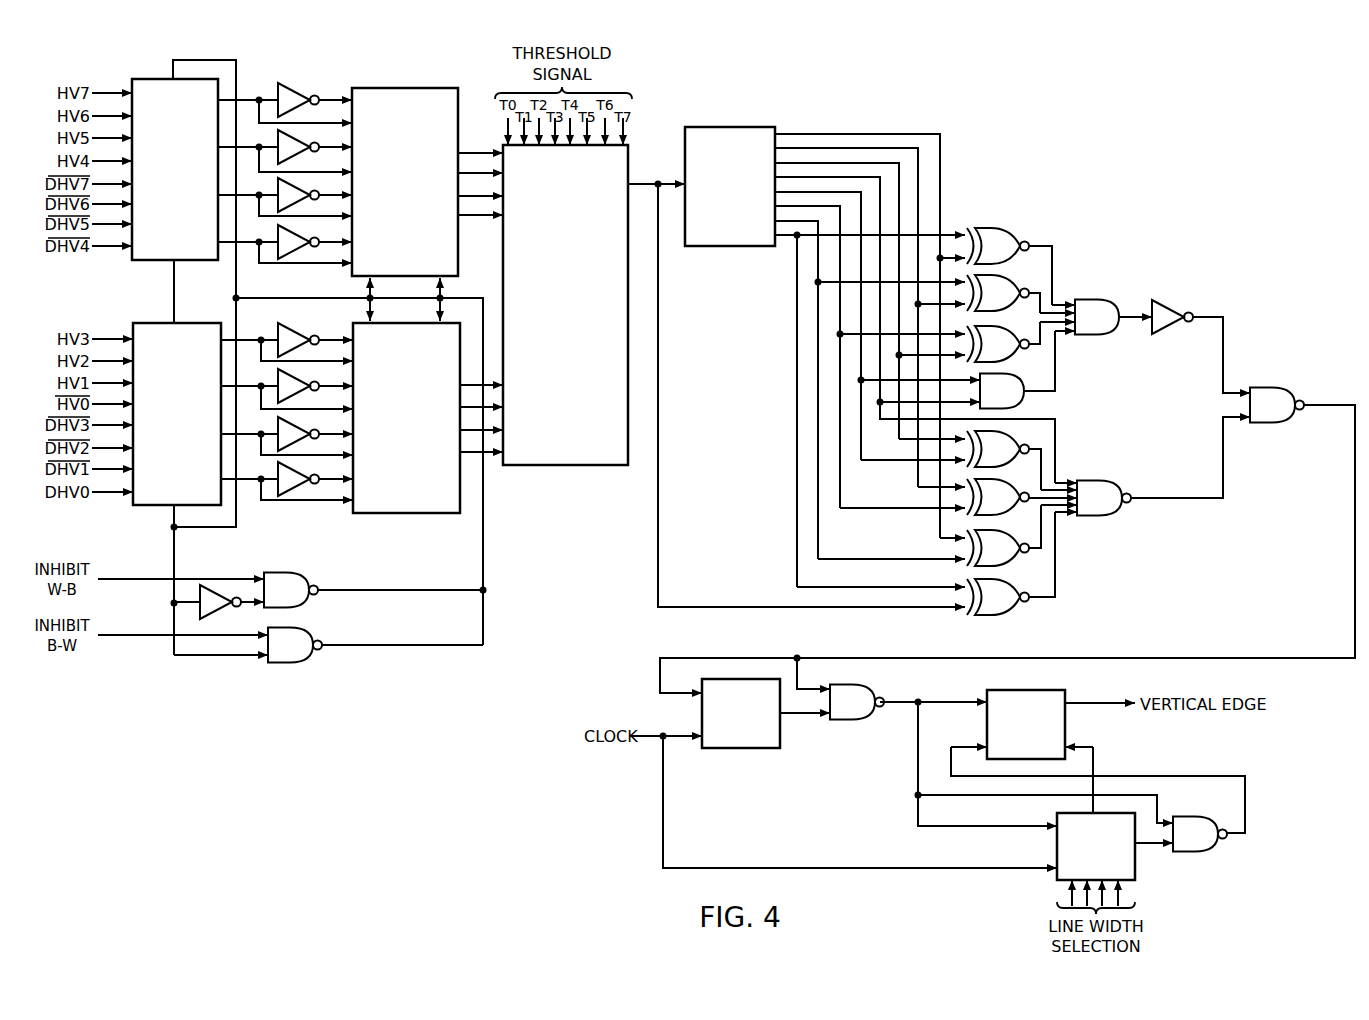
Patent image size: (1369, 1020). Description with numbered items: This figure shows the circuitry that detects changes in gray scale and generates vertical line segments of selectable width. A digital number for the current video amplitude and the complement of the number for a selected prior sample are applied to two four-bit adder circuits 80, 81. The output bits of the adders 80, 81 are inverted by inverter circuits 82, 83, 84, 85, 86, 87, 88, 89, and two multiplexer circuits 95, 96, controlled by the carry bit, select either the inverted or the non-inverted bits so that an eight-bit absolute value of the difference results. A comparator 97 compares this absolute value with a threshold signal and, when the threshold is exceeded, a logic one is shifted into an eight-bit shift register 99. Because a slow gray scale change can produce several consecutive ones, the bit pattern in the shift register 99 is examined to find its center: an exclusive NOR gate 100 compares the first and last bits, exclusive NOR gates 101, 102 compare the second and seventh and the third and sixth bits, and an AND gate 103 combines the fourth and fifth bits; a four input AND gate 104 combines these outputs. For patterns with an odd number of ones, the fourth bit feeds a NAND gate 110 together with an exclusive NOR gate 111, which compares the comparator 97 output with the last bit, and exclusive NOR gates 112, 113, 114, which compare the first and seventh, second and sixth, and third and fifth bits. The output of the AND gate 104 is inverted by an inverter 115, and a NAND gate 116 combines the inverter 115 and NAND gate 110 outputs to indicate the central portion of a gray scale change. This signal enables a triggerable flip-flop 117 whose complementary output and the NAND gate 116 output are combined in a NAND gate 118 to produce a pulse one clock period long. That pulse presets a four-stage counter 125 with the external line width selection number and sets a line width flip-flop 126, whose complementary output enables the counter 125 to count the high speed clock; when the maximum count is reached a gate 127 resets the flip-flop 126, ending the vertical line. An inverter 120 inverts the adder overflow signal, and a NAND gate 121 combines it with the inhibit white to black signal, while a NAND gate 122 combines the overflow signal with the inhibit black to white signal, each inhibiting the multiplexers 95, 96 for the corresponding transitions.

The 4-bit adder circuit 80 is at (157, 82).
The 4-bit adder circuit 81 is at (153, 322).
The inverter circuit 82 is at (292, 93).
The inverter circuit 83 is at (300, 147).
The inverter circuit 84 is at (300, 194).
The inverter circuit 85 is at (300, 240).
The inverter circuit 86 is at (292, 334).
The inverter circuit 87 is at (304, 384).
The inverter circuit 88 is at (304, 431).
The inverter circuit 89 is at (304, 476).
The multiplexer circuit 95 is at (382, 86).
The multiplexer circuit 96 is at (352, 323).
The comparator 97 is at (597, 465).
The 8-bit shift register 99 is at (695, 121).
The exclusive NOR gate 100 is at (996, 232).
The exclusive NOR gate 101 is at (1002, 278).
The exclusive NOR gate 102 is at (1010, 356).
The AND gate 103 is at (1024, 401).
The four input AND gate 104 is at (1092, 302).
The NAND gate 110 is at (1104, 480).
The exclusive NOR gate 111 is at (1016, 583).
The exclusive NOR gate 112 is at (998, 533).
The exclusive NOR gate 113 is at (1004, 482).
The exclusive NOR gate 114 is at (1008, 437).
The inverter 115 is at (1157, 306).
The NAND gate 116 is at (1275, 387).
The triggerable flip-flop 117 is at (766, 748).
The NAND gate 118 is at (857, 720).
The inverter 120 is at (208, 619).
The NAND gate 121 is at (307, 574).
The NAND gate 122 is at (311, 623).
The 4-stage counter 125 is at (1050, 817).
The line width flip-flop 126 is at (992, 689).
The gate 127 is at (1186, 817).